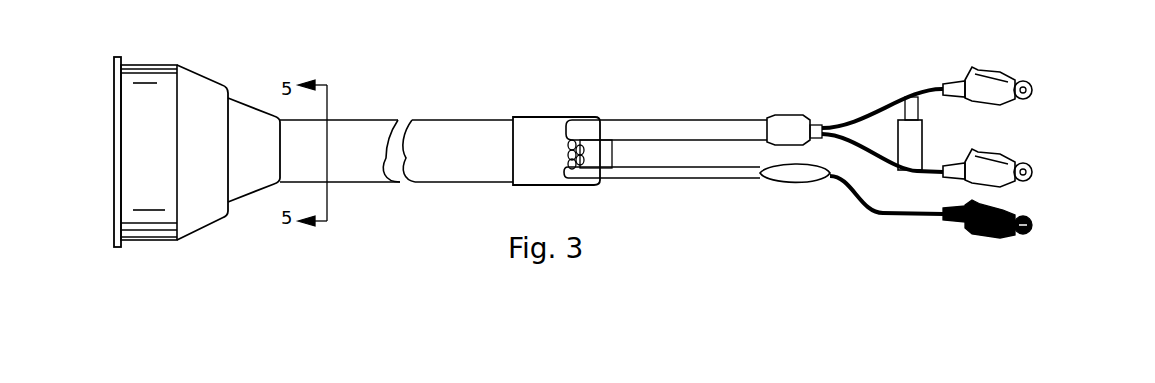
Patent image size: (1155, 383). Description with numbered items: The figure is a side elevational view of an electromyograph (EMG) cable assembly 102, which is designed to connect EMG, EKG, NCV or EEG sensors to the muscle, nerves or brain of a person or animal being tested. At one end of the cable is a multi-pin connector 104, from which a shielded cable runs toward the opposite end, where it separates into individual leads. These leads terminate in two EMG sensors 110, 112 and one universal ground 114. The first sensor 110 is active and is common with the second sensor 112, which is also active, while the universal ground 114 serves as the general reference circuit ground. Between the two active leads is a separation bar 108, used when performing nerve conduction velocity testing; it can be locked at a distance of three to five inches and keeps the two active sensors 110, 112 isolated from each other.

The EMG cable assembly 102 is at (447, 100).
The multi-pin connector 104 is at (146, 73).
The separation bar 108 is at (912, 136).
The EMG sensor 110 is at (1033, 82).
The EMG sensor 112 is at (1033, 166).
The universal ground 114 is at (1035, 218).